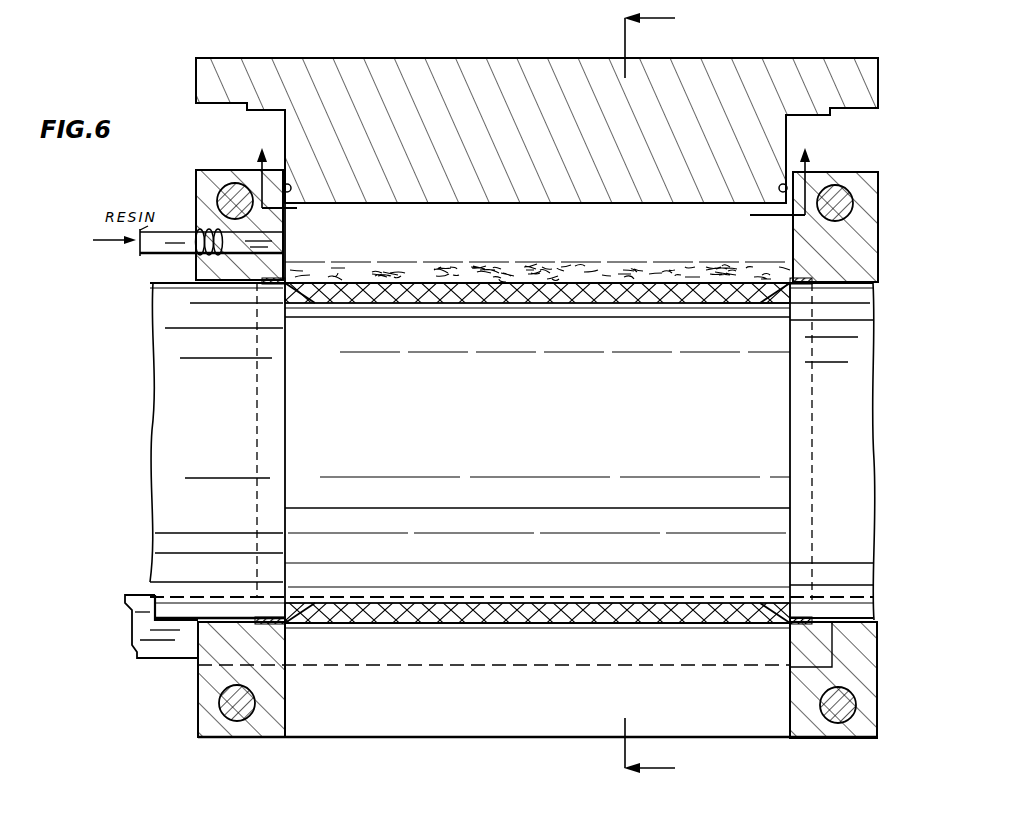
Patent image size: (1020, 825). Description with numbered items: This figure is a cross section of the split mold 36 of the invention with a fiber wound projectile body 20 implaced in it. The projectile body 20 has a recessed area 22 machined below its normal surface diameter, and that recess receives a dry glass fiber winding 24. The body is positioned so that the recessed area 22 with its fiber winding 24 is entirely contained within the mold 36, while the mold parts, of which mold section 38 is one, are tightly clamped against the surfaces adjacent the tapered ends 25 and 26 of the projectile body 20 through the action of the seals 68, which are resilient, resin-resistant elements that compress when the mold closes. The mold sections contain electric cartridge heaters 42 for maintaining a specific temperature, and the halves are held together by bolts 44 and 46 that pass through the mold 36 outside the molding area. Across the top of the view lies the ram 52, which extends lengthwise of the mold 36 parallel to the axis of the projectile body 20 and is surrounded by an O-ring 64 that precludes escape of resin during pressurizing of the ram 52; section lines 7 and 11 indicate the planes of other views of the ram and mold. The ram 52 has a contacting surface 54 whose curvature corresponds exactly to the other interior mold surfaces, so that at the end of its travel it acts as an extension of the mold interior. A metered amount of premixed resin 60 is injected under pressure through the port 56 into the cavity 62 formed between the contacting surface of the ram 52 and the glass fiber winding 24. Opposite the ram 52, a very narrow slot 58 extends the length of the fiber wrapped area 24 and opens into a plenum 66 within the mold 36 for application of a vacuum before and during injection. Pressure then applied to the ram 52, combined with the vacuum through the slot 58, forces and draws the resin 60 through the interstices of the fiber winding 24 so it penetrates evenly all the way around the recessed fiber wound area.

The section line 7- 7 is at (660, 395).
The section line 11- 11 is at (529, 171).
The projectile body 20 is at (185, 455).
The recessed area 22 is at (440, 396).
The fiber winding 24 is at (433, 284).
The tapered end 25 is at (323, 307).
The tapered end 26 is at (772, 302).
The split mold 36 is at (212, 170).
The mold section 38 is at (196, 188).
The electric cartridge heater 42 is at (140, 630).
The bolt 44 is at (253, 212).
The bolt 46 is at (226, 698).
The ram 52 is at (428, 64).
The contacting surface 54 is at (368, 205).
The port 56 is at (198, 283).
The slot 58 is at (408, 627).
The resin 60 is at (557, 298).
The cavity 62 is at (550, 250).
The O-ring 64 is at (287, 184).
The plenum 66 is at (445, 737).
The seal 68 is at (278, 284).